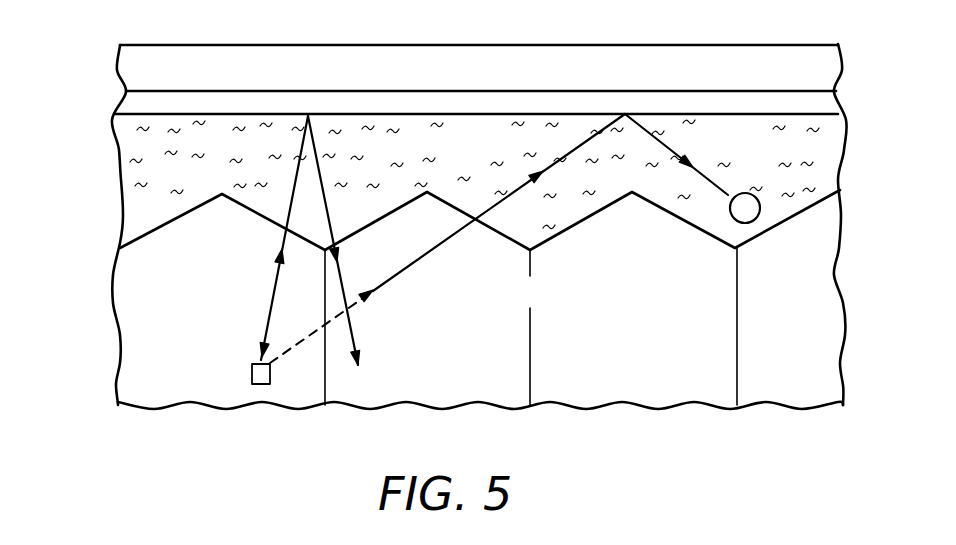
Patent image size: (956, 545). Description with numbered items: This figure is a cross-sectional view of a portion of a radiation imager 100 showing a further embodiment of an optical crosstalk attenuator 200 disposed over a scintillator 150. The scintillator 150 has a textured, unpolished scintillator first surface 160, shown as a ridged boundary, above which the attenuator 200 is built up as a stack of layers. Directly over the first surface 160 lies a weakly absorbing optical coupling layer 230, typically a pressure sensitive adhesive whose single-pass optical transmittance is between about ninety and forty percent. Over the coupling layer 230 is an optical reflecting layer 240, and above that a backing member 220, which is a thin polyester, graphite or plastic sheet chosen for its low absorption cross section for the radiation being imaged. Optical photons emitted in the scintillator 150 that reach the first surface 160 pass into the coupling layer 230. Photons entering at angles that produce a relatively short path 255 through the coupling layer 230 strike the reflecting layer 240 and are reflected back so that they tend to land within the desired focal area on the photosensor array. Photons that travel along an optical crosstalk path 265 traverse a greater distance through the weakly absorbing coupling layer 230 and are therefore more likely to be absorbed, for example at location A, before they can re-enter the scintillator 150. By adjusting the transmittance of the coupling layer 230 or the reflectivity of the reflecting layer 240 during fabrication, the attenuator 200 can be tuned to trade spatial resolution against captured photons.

The imager 100 is at (346, 27).
The backing member 220 is at (120, 53).
The optical reflecting layer 240 is at (126, 94).
The optical coupling layer 230 is at (114, 141).
The scintillator 150 is at (678, 308).
The scintillator first surface 160 is at (512, 213).
The path 255 is at (333, 217).
The optical crosstalk path 265 is at (518, 186).
The absorption location A is at (748, 223).
The optical crosstalk attenuator 200 is at (856, 38).